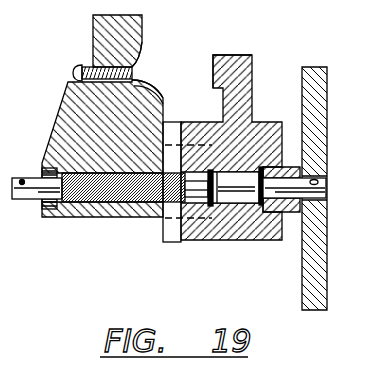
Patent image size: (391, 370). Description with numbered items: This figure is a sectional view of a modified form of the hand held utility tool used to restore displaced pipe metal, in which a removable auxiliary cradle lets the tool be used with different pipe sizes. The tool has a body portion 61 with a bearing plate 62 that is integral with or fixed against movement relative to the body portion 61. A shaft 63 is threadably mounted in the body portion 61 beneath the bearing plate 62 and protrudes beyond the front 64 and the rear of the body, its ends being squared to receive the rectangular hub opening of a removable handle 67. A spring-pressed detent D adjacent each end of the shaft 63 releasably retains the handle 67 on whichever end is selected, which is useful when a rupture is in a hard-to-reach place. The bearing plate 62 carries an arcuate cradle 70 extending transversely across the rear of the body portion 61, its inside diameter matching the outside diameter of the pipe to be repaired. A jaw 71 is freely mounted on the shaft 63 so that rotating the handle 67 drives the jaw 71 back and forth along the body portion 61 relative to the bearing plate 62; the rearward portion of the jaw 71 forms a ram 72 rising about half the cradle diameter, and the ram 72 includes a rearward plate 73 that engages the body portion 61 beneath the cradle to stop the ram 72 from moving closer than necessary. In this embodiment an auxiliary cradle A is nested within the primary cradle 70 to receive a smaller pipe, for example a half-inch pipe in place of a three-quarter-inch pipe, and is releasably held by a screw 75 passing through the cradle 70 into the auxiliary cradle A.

The body portion 61 is at (170, 230).
The bearing plate 62 is at (92, 24).
The shaft 63 is at (16, 200).
The front 64 is at (293, 238).
The removable handle 67 is at (312, 67).
The arcuate cradle 70 is at (133, 50).
The jaw 71 is at (247, 55).
The ram 72 is at (214, 62).
The rearward plate 73 is at (176, 124).
The screw 75 is at (72, 73).
The auxiliary cradle A is at (138, 74).
The spring-pressed detent D is at (22, 180).